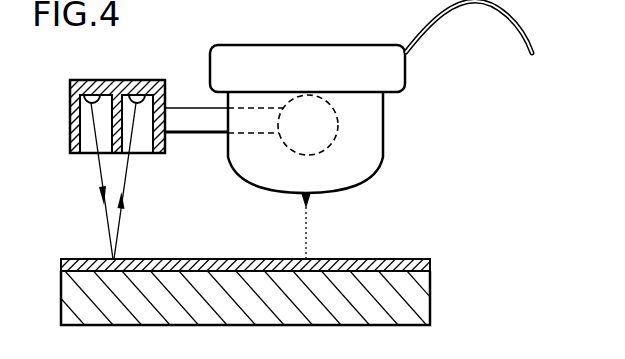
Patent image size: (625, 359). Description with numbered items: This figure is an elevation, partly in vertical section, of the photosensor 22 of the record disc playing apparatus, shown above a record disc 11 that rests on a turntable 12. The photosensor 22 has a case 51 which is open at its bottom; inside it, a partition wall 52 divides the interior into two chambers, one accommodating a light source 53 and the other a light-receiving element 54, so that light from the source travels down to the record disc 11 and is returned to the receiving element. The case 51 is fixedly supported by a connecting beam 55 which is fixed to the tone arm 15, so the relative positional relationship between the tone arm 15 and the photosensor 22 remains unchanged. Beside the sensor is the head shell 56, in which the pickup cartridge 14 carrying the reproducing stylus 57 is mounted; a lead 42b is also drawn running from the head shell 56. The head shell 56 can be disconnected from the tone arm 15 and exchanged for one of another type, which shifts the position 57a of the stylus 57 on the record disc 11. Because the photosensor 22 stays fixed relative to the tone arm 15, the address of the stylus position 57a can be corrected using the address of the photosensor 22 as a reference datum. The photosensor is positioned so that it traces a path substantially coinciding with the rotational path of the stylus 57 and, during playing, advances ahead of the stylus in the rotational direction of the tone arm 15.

The optical detection head 22 is at (68, 78).
The holder block 51 is at (166, 81).
The recess 52 is at (120, 130).
The light emitting element 53 is at (92, 100).
The light receiving element 54 is at (137, 100).
The connecting rod 55 is at (193, 127).
The housing cover 56 is at (398, 72).
The lead wire 42b is at (407, 26).
The stylus body 14 is at (383, 158).
The pivot 15 is at (338, 124).
The stylus tip 57 is at (312, 198).
The contact point 57a is at (303, 258).
The surface layer 11 is at (377, 264).
The substrate 12 is at (422, 293).